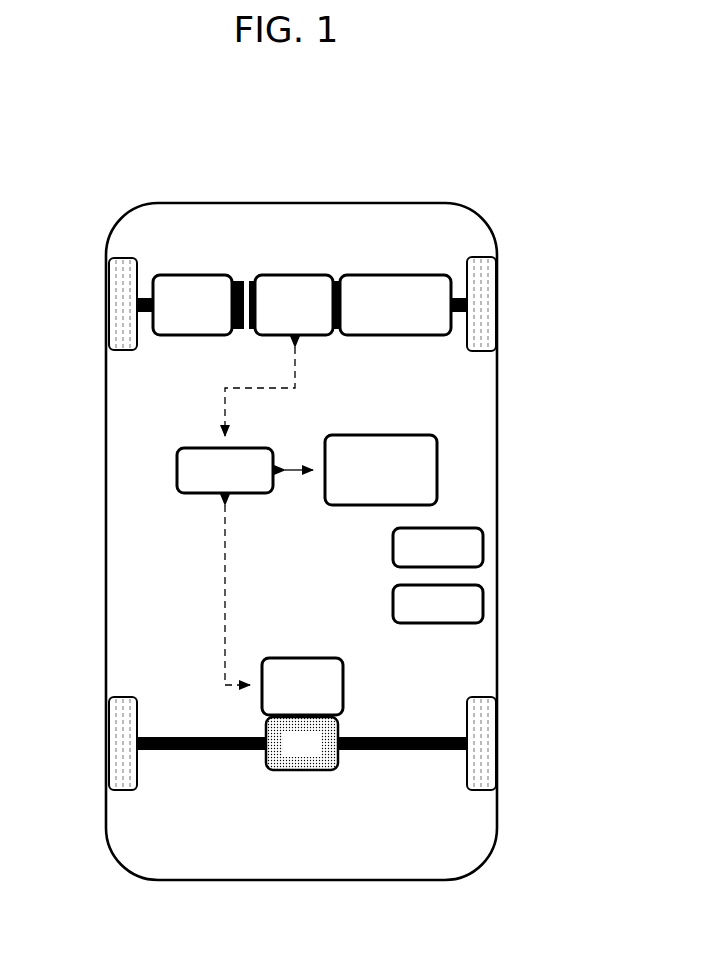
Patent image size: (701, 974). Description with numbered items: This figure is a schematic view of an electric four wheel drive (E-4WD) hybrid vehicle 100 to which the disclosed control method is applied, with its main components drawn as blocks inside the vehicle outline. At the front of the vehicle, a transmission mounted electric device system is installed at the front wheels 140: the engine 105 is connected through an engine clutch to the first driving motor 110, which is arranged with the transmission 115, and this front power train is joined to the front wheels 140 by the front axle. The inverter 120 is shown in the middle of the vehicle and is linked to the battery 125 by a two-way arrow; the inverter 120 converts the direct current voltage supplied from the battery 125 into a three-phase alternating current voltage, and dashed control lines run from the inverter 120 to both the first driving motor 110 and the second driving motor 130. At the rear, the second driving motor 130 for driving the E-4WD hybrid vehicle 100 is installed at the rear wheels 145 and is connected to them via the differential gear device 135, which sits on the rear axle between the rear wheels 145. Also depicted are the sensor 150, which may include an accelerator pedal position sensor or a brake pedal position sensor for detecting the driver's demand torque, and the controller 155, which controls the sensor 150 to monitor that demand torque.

The E-4WD hybrid vehicle 100 is at (498, 415).
The engine 105 is at (189, 274).
The first driving motor 110 is at (293, 274).
The transmission 115 is at (393, 274).
The inverter 120 is at (183, 495).
The battery 125 is at (378, 434).
The second driving motor 130 is at (345, 685).
The differential gear device 135 is at (302, 772).
The front wheels 140 is at (112, 300).
The rear wheels 145 is at (112, 743).
The sensor 150 is at (393, 548).
The controller 155 is at (393, 605).